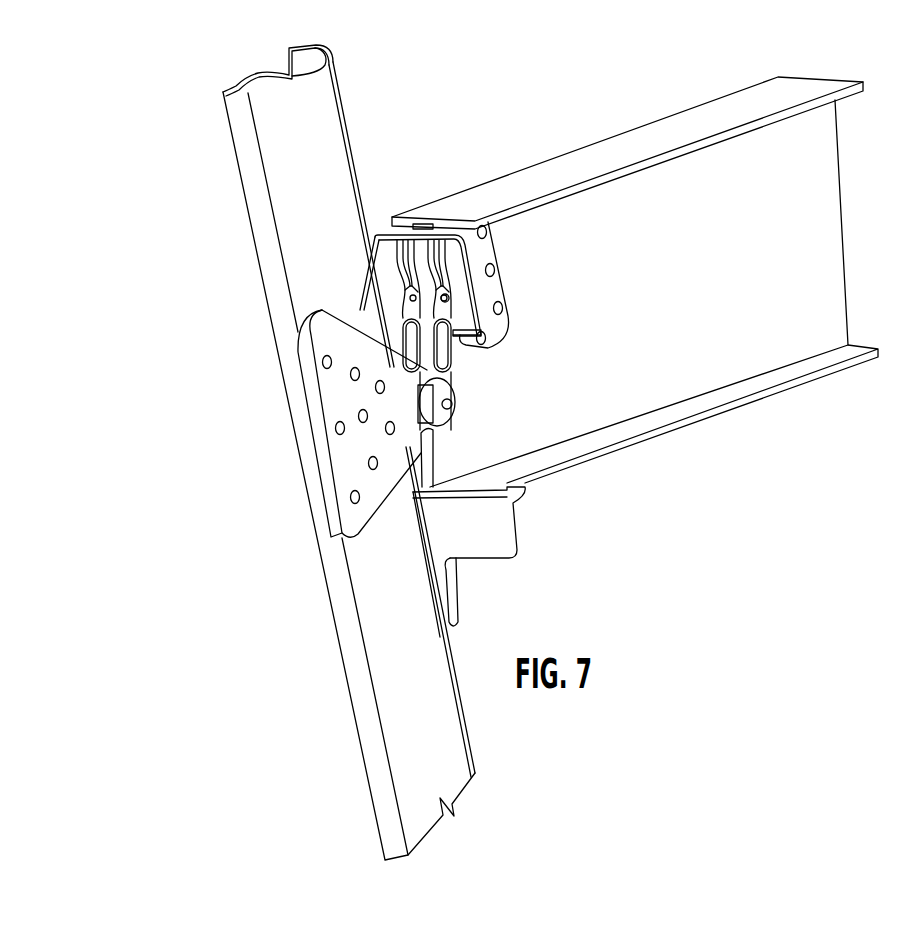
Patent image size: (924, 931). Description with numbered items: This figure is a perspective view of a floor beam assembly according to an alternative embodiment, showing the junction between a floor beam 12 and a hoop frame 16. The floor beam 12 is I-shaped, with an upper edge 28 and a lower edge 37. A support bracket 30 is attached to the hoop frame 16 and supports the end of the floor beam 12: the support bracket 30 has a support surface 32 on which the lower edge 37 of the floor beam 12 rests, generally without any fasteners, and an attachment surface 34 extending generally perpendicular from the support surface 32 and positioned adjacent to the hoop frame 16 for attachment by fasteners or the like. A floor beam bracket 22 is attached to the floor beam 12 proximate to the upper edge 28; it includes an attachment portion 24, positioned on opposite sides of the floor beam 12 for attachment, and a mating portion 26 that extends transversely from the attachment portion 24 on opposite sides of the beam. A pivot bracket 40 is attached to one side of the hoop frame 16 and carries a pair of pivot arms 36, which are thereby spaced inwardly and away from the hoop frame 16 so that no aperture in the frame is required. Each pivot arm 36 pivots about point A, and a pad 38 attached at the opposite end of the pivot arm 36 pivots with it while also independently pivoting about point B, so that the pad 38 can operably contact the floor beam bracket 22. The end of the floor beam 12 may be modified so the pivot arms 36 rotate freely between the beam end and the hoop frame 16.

The floor beam 12 is at (644, 282).
The hoop frame 16 is at (293, 259).
The floor beam bracket 22 is at (467, 224).
The attachment portion 24 is at (490, 253).
The mating portion 26 is at (481, 331).
The upper edge 28 is at (552, 168).
The support bracket 30 is at (518, 557).
The support surface 32 is at (527, 486).
The attachment surface 34 is at (447, 606).
The pivot arm 36 is at (428, 343).
The lower edge 37 is at (705, 405).
The pad 38 is at (387, 233).
The pivot bracket 40 is at (325, 423).
The point A is at (453, 404).
The point B is at (449, 291).